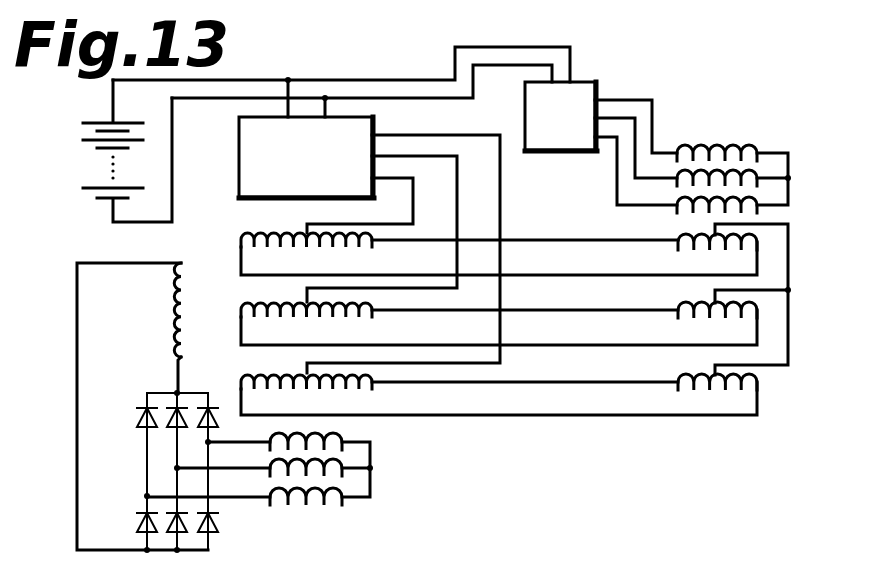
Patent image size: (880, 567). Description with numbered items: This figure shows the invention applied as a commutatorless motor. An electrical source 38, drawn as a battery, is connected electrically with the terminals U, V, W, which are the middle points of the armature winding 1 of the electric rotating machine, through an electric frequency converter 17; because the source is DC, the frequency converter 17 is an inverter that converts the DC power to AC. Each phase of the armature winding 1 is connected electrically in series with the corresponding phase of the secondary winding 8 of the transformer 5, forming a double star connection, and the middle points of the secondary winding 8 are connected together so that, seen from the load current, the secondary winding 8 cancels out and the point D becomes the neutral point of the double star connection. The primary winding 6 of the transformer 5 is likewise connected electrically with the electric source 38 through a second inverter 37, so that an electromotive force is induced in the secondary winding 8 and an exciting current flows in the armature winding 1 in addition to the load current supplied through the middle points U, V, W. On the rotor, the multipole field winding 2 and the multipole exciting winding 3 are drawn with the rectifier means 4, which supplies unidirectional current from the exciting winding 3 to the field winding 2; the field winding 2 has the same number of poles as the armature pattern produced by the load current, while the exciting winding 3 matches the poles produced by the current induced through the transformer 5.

The electrical source 38 is at (305, 134).
The electric frequency converter 17 is at (412, 55).
The inverter 37 is at (637, 68).
The primary winding 6 is at (710, 147).
The armature winding 1 is at (250, 237).
The middle point U is at (305, 236).
The middle point V is at (305, 304).
The middle point W is at (305, 374).
The secondary winding 8 is at (757, 243).
The neutral point D is at (788, 290).
The transformer 5 is at (754, 395).
The field winding 2 is at (168, 317).
The rectifier means 4 is at (142, 465).
The exciting winding 3 is at (345, 466).